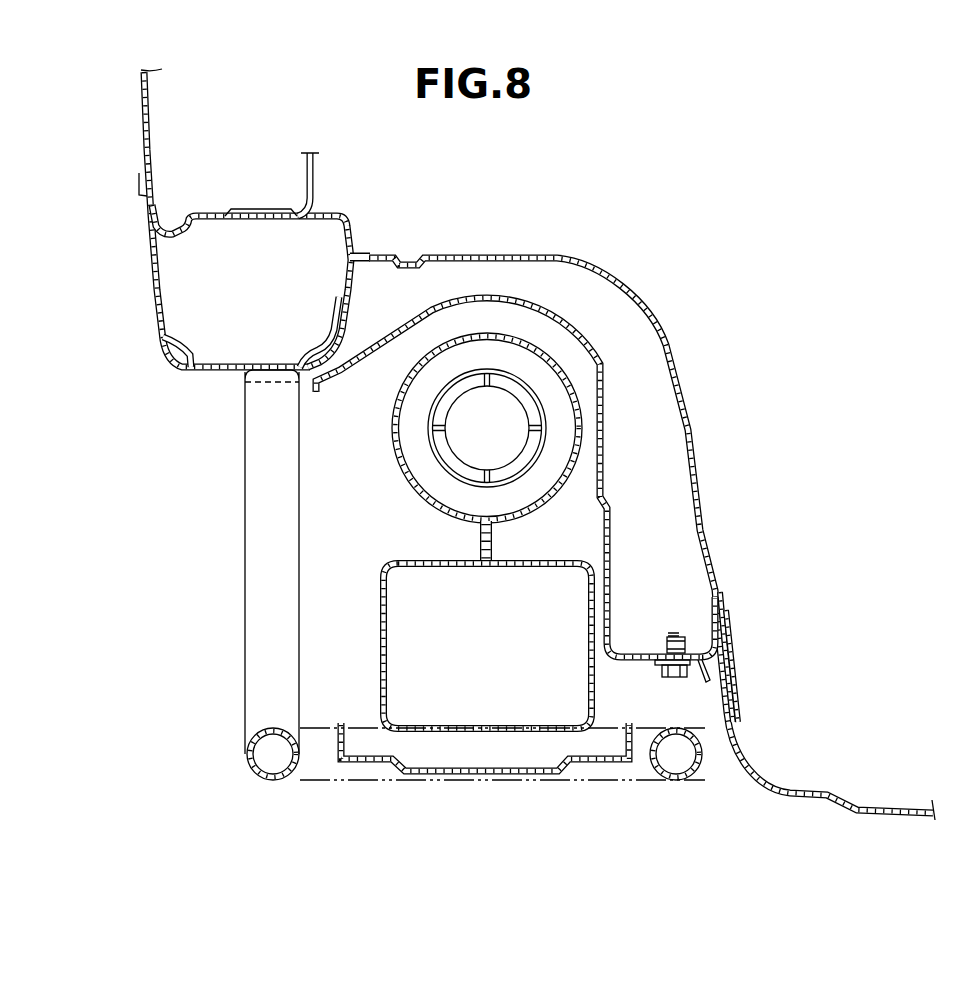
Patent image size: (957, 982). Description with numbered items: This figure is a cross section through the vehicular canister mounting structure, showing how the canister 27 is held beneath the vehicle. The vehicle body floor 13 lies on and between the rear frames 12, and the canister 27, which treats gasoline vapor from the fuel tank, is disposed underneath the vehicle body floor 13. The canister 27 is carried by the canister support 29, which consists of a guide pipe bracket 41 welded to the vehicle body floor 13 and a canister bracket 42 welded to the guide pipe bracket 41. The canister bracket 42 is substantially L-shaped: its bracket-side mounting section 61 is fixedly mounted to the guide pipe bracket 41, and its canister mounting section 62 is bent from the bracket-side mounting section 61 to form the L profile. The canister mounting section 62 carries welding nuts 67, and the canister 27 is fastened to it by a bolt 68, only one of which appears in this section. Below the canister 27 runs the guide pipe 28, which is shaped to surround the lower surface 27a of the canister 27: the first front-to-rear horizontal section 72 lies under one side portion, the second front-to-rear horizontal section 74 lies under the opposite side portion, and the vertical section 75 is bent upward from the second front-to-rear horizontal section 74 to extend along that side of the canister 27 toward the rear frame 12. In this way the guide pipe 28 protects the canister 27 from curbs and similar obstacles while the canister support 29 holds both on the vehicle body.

The rear frame 12 is at (150, 280).
The vehicle body floor 13 is at (563, 250).
The vehicular canister 27 is at (488, 293).
The lower surface 27a is at (490, 775).
The guide pipe 28 is at (202, 596).
The canister support 29 is at (778, 604).
The guide pipe bracket 41 is at (732, 608).
The canister bracket 42 is at (722, 590).
The bracket-side mounting section 61 is at (713, 600).
The canister mounting section 62 is at (657, 650).
The welding nut 67 is at (683, 640).
The bolt 68 is at (662, 675).
The first front-to-rear horizontal section 72 is at (700, 741).
The second front-to-rear horizontal section 74 is at (248, 760).
The vertical section 75 is at (257, 568).